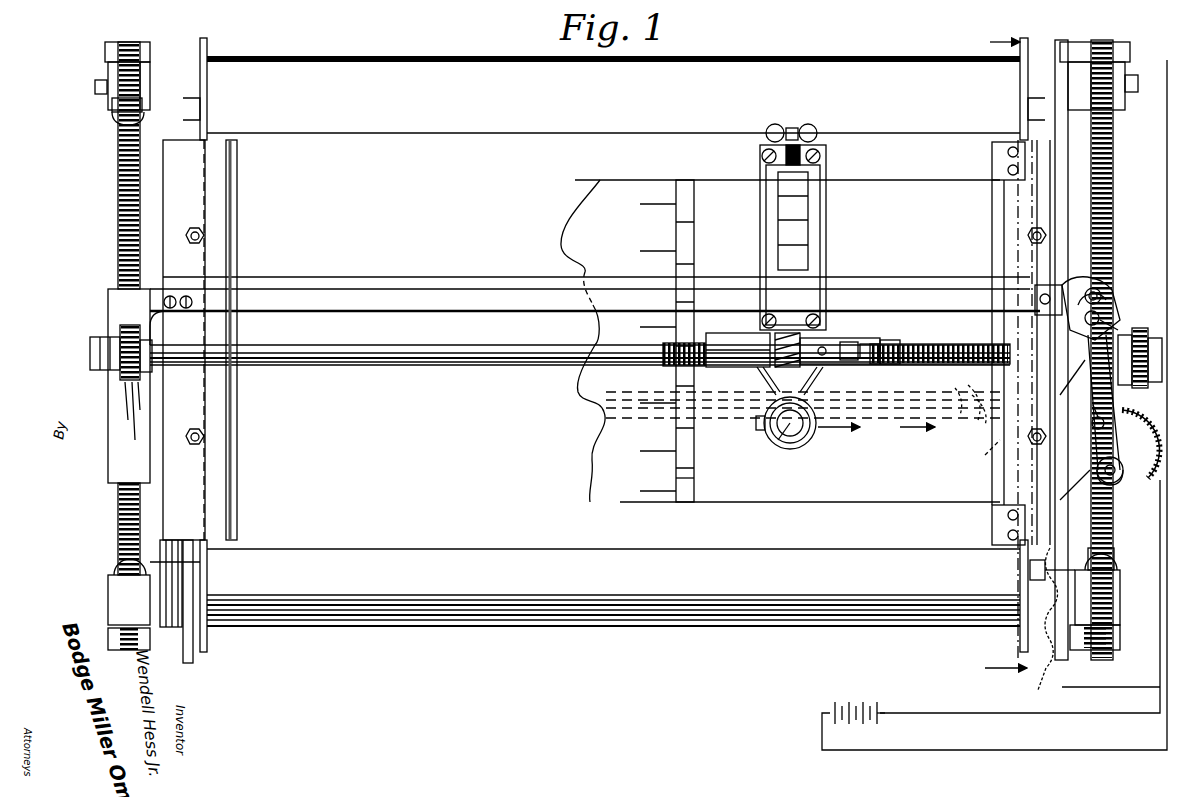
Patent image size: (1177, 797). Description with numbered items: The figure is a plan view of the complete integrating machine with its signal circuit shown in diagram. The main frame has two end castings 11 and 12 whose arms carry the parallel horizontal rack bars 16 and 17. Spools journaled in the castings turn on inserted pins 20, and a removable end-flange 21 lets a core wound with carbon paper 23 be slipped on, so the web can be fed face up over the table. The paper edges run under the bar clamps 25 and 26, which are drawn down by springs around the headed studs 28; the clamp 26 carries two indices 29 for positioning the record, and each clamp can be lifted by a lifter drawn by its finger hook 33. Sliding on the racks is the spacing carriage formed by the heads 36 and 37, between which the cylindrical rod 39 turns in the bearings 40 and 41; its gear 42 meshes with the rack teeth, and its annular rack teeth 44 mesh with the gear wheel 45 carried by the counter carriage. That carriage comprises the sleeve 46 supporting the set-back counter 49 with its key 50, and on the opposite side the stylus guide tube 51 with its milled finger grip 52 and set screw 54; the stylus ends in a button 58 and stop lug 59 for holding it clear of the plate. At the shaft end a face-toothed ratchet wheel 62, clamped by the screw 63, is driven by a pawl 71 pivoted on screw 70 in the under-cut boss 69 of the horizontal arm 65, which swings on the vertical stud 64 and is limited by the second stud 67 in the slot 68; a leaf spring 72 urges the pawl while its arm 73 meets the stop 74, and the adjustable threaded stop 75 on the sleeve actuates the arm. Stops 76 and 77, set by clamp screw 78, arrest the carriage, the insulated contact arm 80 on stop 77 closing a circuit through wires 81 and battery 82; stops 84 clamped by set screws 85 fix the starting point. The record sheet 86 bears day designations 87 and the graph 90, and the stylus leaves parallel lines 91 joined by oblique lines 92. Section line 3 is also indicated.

The section line 3 is at (1006, 356).
The end casting 11 is at (170, 140).
The end casting 12 is at (1062, 128).
The rack bar 16 is at (120, 212).
The rack bar 17 is at (1113, 178).
The inserted pins 20 is at (112, 112).
The end-flange 21 is at (207, 90).
The carbon paper 23 is at (590, 648).
The bar clamp 25 is at (238, 228).
The bar clamp 26 is at (1000, 215).
The headed studs 28 is at (190, 246).
The indices 29 is at (990, 168).
The finger hook 33 is at (194, 660).
The sliding head 36 is at (108, 300).
The sliding head 37 is at (1135, 420).
The cylindrical rod 39 is at (515, 355).
The bearing 40 is at (100, 372).
The bearing 41 is at (1075, 360).
The gear 42 is at (120, 335).
The annular rack teeth 44 is at (905, 348).
The gear wheel 45 is at (825, 340).
The sleeve 46 is at (725, 333).
The set-back counter 49 is at (815, 235).
The set-back key 50 is at (812, 133).
The stylus guide tube 51 is at (815, 438).
The milled finger grip 52 is at (790, 450).
The set screw 54 is at (760, 428).
The button 58 is at (780, 440).
The stop lug 59 is at (820, 430).
The ratchet wheel 62 is at (1090, 420).
The screw 63 is at (1146, 361).
The vertical stud 64 is at (1124, 472).
The horizontal arm 65 is at (1082, 480).
The second stud 67 is at (1108, 292).
The slot 68 is at (1112, 282).
The under-cut boss 69 is at (1062, 318).
The screw 70 is at (1100, 318).
The pawl 71 is at (1120, 332).
The leaf spring 72 is at (1090, 420).
The arm 73 is at (992, 440).
The stop 74 is at (1100, 296).
The adjustable threaded stop 75 is at (882, 360).
The stop 76 is at (108, 600).
The stop 77 is at (1095, 610).
The clamp screw 78 is at (166, 652).
The insulated contact arm 80 is at (1060, 580).
The flexible wires 81 is at (1038, 750).
The battery 82 is at (835, 705).
The stops 84 is at (112, 70).
The set screws 85 is at (95, 88).
The record sheet 86 is at (360, 505).
The abscissa designations 87 is at (694, 479).
The record graph 90 is at (600, 183).
The parallel lines 91 is at (952, 420).
The oblique connecting lines 92 is at (961, 396).